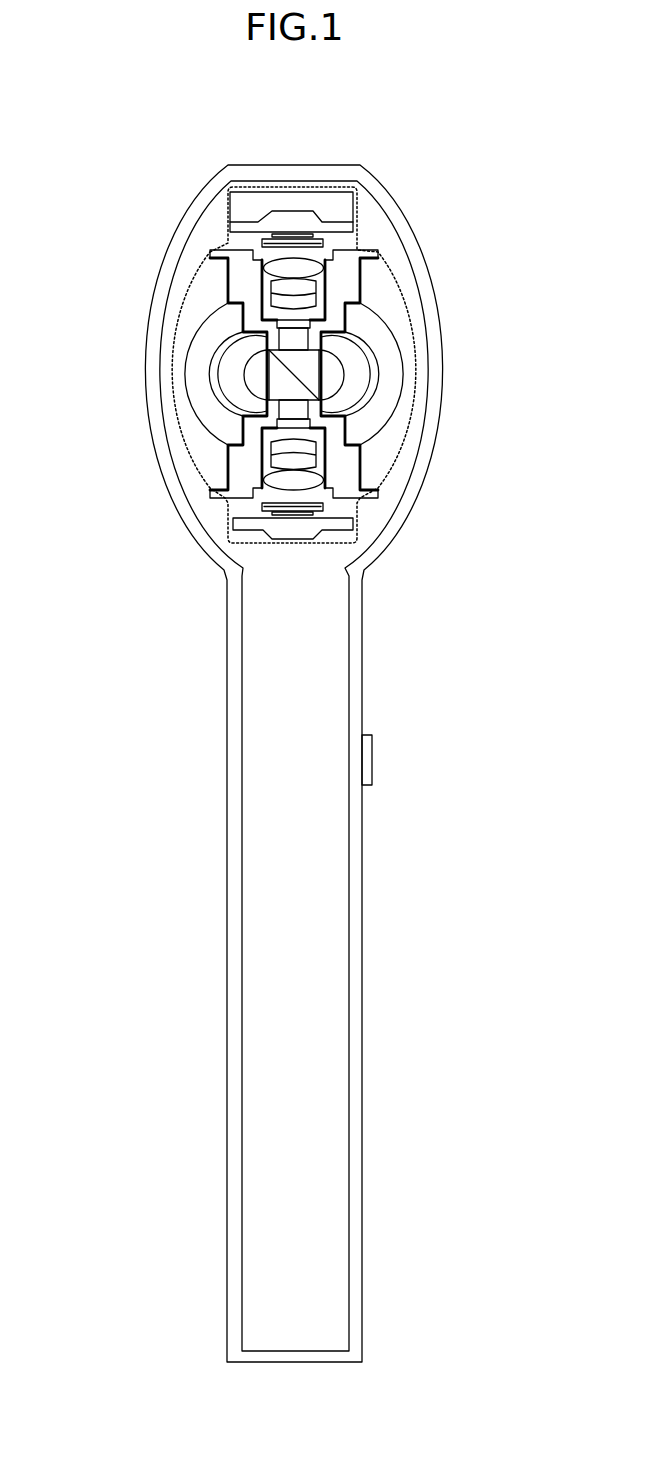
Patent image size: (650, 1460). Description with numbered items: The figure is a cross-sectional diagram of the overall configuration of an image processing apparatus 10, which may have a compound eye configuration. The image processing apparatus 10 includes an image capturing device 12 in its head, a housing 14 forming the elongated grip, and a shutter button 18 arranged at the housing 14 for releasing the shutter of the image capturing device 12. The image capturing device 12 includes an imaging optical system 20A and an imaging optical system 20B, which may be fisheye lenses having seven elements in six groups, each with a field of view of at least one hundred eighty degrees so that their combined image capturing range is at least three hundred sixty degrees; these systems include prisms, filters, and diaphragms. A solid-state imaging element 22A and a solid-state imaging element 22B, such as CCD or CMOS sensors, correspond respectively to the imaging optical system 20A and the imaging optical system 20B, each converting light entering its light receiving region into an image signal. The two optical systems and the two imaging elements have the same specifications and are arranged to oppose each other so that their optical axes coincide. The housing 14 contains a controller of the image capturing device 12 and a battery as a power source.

The image processing apparatus 10 is at (71, 191).
The image capturing device 12 is at (385, 490).
The housing 14 is at (228, 1038).
The shutter button 18 is at (372, 762).
The imaging optical system 20A is at (164, 433).
The imaging optical system 20B is at (418, 439).
The solid-state imaging element 22A is at (238, 520).
The solid-state imaging element 22B is at (240, 226).